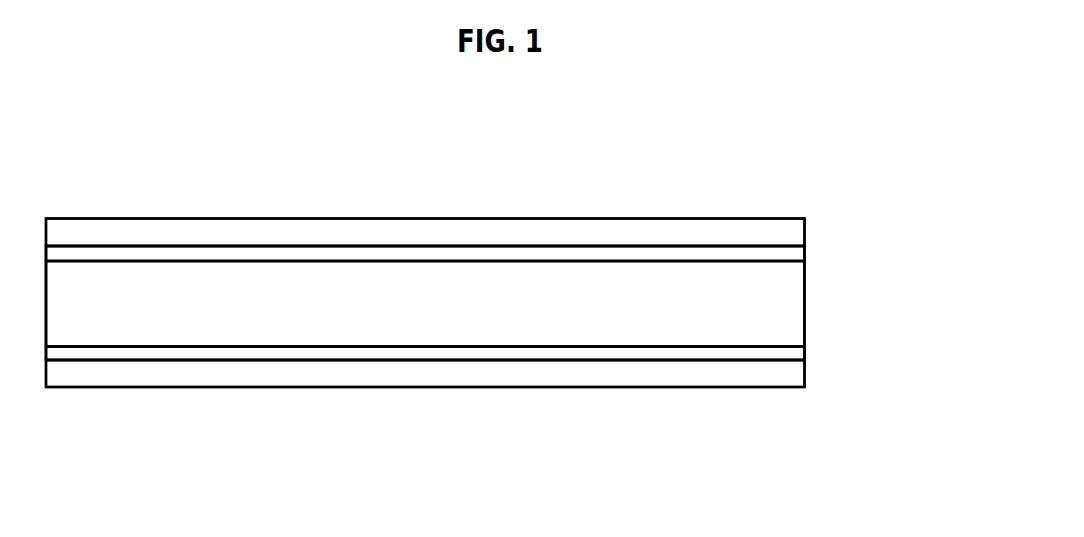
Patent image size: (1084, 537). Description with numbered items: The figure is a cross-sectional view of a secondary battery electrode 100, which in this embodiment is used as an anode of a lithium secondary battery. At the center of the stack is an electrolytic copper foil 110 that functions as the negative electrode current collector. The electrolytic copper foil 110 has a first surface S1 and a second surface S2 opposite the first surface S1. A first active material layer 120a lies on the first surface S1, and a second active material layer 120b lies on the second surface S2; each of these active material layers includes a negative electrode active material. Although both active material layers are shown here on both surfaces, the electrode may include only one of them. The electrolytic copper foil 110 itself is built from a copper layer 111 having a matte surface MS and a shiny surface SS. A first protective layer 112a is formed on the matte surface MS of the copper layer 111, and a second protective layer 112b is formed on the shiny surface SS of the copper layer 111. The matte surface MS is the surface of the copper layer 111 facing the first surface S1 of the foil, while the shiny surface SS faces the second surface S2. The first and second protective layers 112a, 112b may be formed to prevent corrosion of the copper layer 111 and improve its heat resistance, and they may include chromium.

The secondary battery electrode 100 is at (458, 139).
The electrolytic copper foil 110 is at (905, 258).
The copper layer 111 is at (796, 304).
The first protective layer 112a is at (798, 253).
The second protective layer 112b is at (797, 352).
The first active material layer 120a is at (793, 234).
The second active material layer 120b is at (792, 367).
The matte surface MS is at (175, 261).
The shiny surface SS is at (175, 346).
The first surface S1 is at (303, 246).
The second surface S2 is at (307, 360).